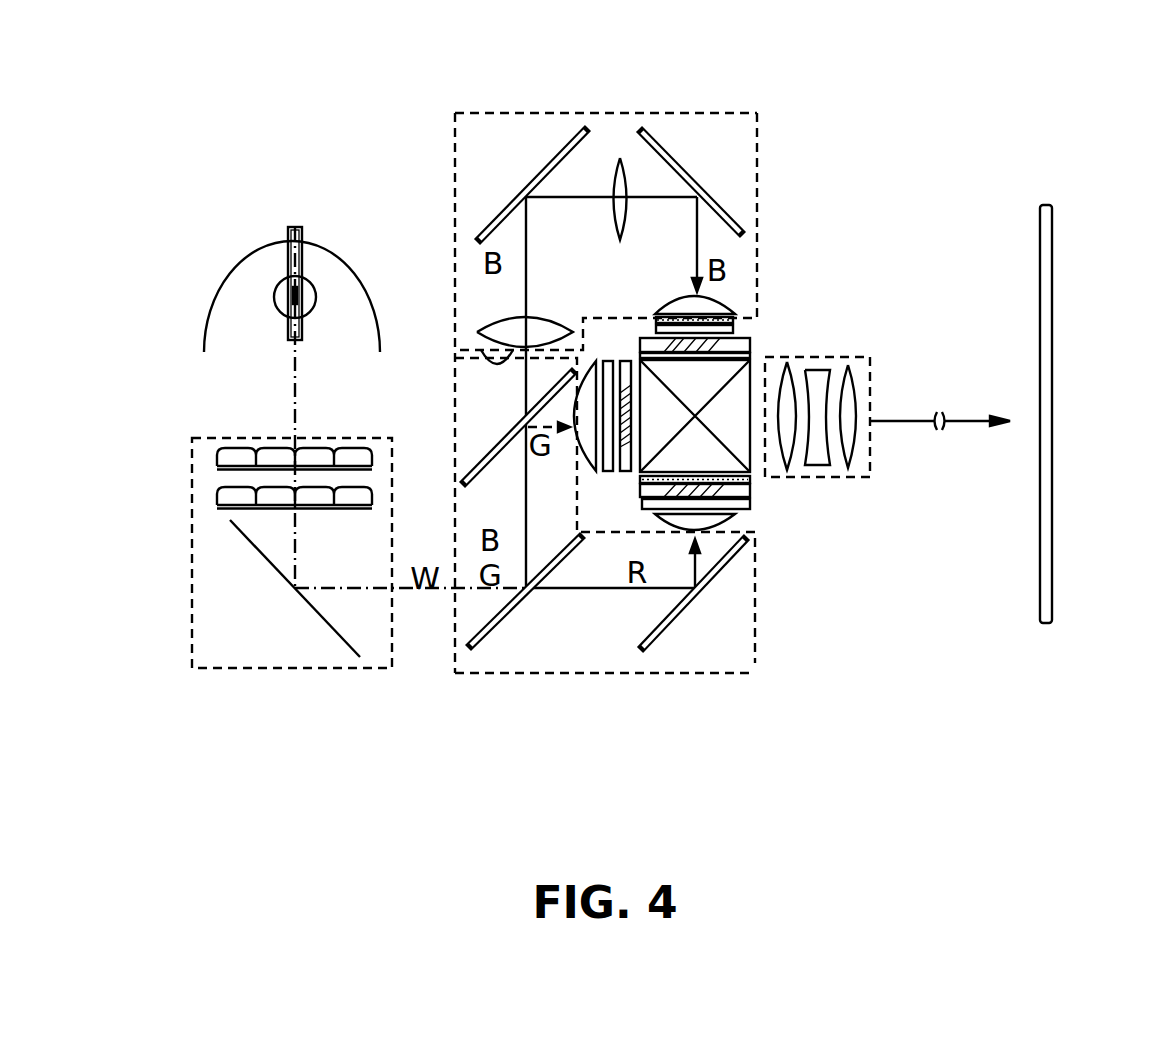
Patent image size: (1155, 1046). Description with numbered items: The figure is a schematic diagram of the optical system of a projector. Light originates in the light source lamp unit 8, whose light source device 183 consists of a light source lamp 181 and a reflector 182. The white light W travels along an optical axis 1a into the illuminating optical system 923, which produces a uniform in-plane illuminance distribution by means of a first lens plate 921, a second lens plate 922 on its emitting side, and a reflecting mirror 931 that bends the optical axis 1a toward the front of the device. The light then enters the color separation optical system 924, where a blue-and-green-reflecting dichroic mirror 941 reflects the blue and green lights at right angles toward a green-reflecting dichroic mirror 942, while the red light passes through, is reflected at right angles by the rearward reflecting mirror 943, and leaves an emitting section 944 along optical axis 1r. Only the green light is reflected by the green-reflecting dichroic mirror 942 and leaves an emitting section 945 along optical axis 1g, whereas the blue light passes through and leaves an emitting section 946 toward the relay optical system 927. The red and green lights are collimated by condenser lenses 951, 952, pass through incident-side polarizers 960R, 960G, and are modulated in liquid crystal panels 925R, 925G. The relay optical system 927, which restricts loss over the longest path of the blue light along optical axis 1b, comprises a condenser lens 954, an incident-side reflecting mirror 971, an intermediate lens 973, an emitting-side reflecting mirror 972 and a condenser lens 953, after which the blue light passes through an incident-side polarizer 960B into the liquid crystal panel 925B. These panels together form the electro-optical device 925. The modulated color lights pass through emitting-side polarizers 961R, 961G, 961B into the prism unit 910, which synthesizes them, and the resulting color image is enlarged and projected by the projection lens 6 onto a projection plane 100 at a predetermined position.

The light source lamp unit 8 is at (245, 268).
The light source lamp 181 is at (280, 281).
The reflector 182 is at (326, 266).
The light source device 183 is at (345, 150).
The optical axis 1a is at (290, 423).
The illuminating optical system 923 is at (192, 592).
The first lens plate 921 is at (217, 463).
The second lens plate 922 is at (217, 501).
The reflecting mirror 931 is at (320, 620).
The relay optical system 927 is at (477, 112).
The color separation optical system 924 is at (755, 663).
The optical axis of blue light 1b is at (591, 197).
The optical axis of green light 1g is at (528, 412).
The optical axis of red light 1r is at (625, 500).
The incident-side reflecting mirror 971 is at (497, 210).
The emitting-side reflecting mirror 972 is at (692, 170).
The intermediate lens 973 is at (622, 158).
The green-reflecting dichroic mirror 942 is at (493, 445).
The emitting section of the green light 945 is at (573, 447).
The blue-and-green-reflecting dichroic mirror 941 is at (480, 650).
The reflecting mirror 943 is at (648, 650).
The emitting section of the red light 944 is at (748, 537).
The condenser lens 954 is at (487, 320).
The emitting section of the blue light 946 is at (490, 368).
The condenser lens 952 is at (590, 361).
The incident-side polarizer 960G is at (637, 398).
The liquid crystal panel 925G is at (624, 361).
The emitting-side polarizer 961G is at (626, 472).
The prism unit 910 is at (750, 362).
The condenser lens 953 is at (735, 300).
The incident-side polarizer 960B is at (748, 328).
The liquid crystal panel 925B is at (748, 345).
The emitting-side polarizer 961B is at (752, 356).
The emitting-side polarizer 961R is at (752, 478).
The liquid crystal panel 925R is at (752, 490).
The incident-side polarizer 960R is at (752, 507).
The condenser lens 951 is at (745, 530).
The electro-optical device 925 is at (628, 508).
The projection lens 6 is at (870, 378).
The projection plane 100 is at (1052, 250).